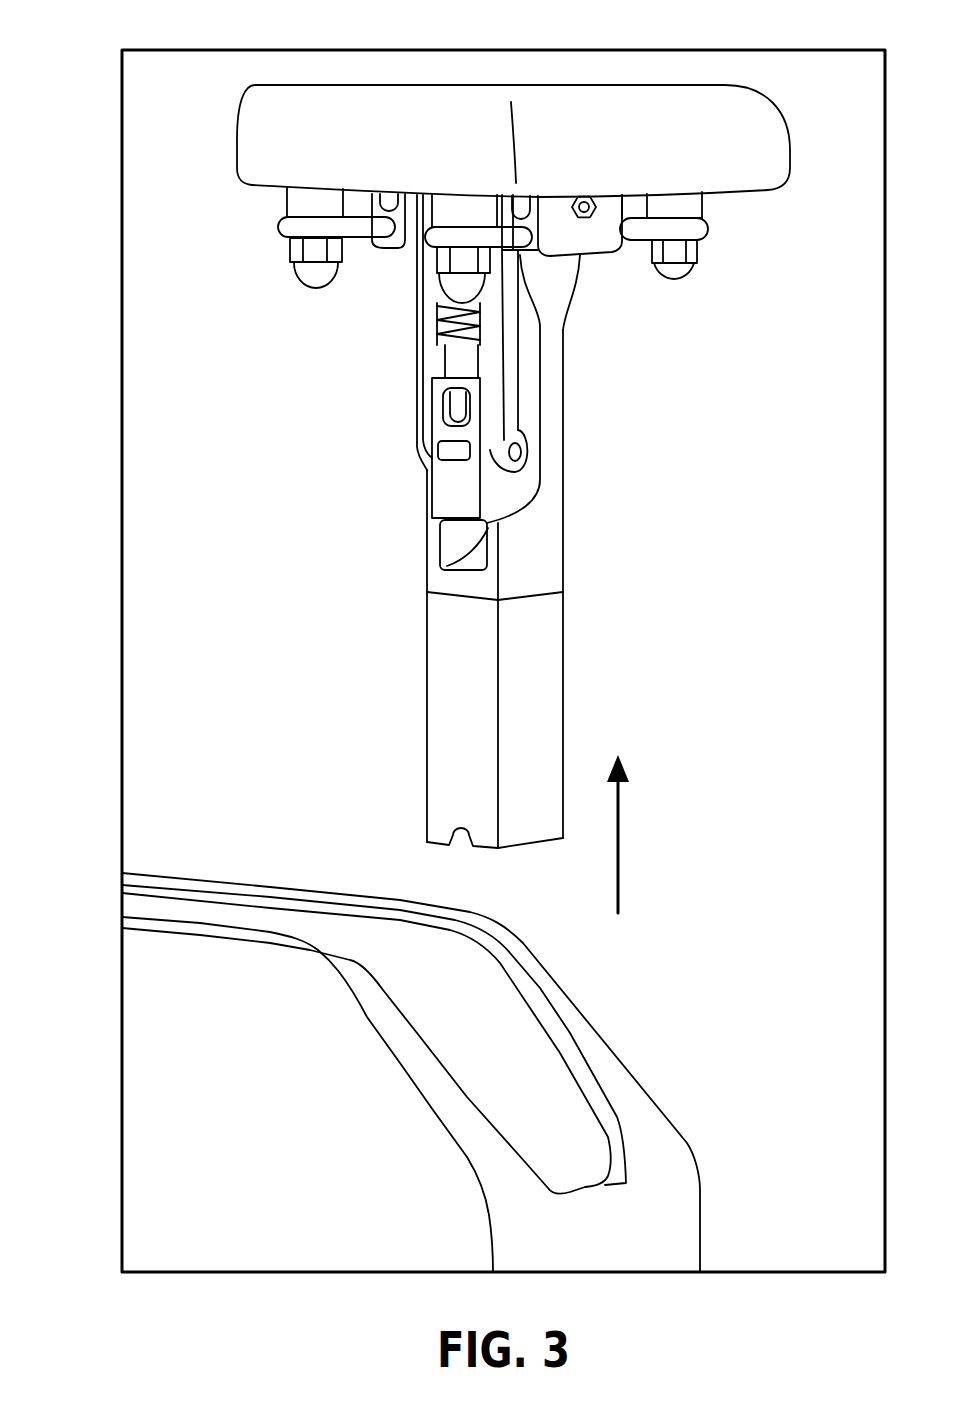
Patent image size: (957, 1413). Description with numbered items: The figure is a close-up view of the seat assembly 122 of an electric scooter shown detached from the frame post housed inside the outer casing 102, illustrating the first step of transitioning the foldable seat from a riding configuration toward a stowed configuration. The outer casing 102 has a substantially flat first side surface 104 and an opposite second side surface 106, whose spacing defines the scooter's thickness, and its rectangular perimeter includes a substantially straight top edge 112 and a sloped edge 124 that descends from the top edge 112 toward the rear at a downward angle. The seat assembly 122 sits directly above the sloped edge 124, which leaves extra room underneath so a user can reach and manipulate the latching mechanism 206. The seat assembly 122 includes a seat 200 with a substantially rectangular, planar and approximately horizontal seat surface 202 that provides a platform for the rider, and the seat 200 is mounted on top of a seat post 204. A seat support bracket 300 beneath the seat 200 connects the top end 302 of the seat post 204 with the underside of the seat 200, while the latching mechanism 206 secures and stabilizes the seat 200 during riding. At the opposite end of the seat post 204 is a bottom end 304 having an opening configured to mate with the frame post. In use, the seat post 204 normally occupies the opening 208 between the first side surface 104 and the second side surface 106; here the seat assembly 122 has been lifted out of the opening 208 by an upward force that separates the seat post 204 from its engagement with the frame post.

The outer casing 102 is at (157, 1090).
The first side surface 104 is at (313, 1178).
The second side surface 106 is at (727, 1196).
The top edge 112 is at (207, 880).
The seat assembly 122 is at (235, 112).
The sloped edge 124 is at (617, 1050).
The seat 200 is at (752, 118).
The seat surface 202 is at (567, 85).
The seat post 204 is at (563, 662).
The latching mechanism 206 is at (392, 410).
The opening 208 is at (384, 950).
The seat support bracket 300 is at (383, 267).
The top end 302 is at (578, 258).
The bottom end 304 is at (518, 846).